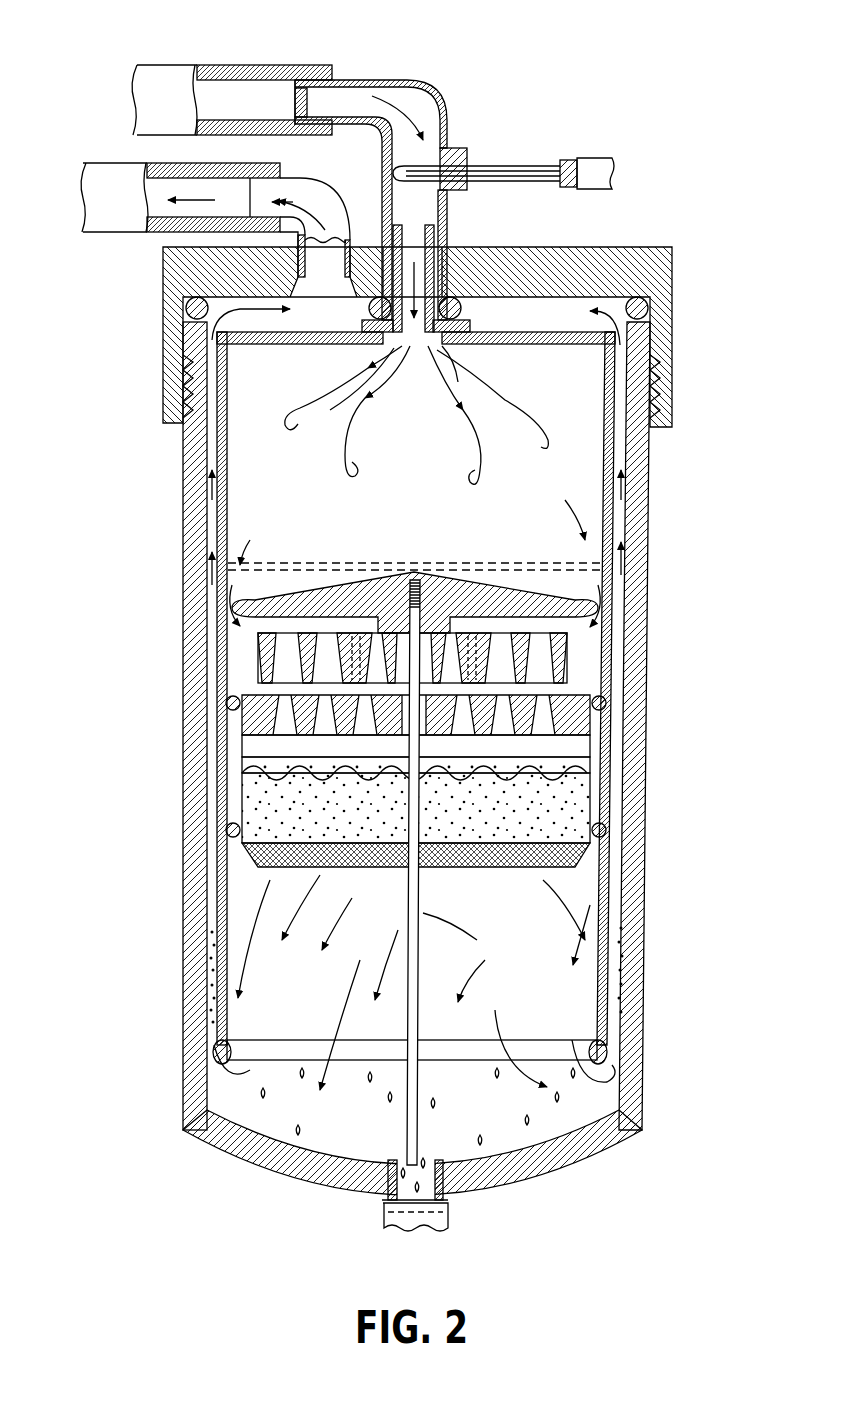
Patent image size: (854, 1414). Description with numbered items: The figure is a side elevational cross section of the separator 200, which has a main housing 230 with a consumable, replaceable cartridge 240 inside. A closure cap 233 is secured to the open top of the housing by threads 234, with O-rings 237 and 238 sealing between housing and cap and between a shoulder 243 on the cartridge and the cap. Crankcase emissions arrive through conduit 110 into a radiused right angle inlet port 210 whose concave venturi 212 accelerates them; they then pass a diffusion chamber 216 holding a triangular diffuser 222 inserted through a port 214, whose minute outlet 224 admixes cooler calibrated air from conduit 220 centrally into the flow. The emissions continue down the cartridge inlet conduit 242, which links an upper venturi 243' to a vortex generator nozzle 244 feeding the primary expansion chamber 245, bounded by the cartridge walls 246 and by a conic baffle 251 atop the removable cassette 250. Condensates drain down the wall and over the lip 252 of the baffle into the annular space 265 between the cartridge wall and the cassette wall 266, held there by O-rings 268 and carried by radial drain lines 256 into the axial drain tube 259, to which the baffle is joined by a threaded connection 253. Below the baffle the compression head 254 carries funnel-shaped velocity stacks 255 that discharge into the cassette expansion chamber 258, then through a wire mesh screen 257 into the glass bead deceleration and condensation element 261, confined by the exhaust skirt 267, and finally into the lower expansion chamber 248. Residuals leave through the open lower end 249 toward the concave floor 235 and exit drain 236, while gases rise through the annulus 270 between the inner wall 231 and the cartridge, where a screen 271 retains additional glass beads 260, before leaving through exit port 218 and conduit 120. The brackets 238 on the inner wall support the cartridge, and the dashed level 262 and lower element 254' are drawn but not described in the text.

The conduit 110 is at (172, 66).
The conduit 120 is at (100, 162).
The separator 200 is at (680, 127).
The inlet port 210 is at (380, 83).
The venturi 212 is at (275, 78).
The port 214 is at (453, 177).
The diffusion chamber 216 is at (430, 157).
The exit port 218 is at (330, 178).
The conduit 220 is at (610, 174).
The diffuser 222 is at (442, 181).
The outlet 224 is at (430, 175).
The main housing 230 is at (183, 603).
The inner wall 231 is at (210, 452).
The closure cap 233 is at (632, 289).
The threads 234 is at (188, 380).
The concave floor 235 is at (330, 1147).
The exit drain 236 is at (441, 1195).
The O-ring 237 is at (186, 308).
The O-ring / support bracket 238 is at (372, 314).
The cartridge 240 is at (212, 724).
The cartridge inlet conduit 242 is at (418, 247).
The shoulder 243 is at (482, 227).
The upper venturi 243' is at (495, 205).
The vortex generator nozzle 244 is at (436, 350).
The primary expansion chamber 245 is at (434, 452).
The cartridge wall 246 is at (228, 476).
The expansion chamber 248 is at (549, 991).
The open lower end 249 is at (435, 1062).
The cassette 250 is at (236, 763).
The baffle 251 is at (490, 587).
The lip 252 is at (590, 590).
The threaded connection / shoulder 253 is at (366, 657).
The compression head 254 is at (332, 598).
The lower filter element 254' is at (322, 683).
The velocity stacks 255 is at (258, 655).
The radial drain lines 256 is at (457, 690).
The wire mesh screen 257 is at (590, 766).
The expansion chamber 258 is at (590, 740).
The drain tube 259 is at (420, 920).
The glass beads 260 is at (210, 985).
The deceleration and condensation element 261 is at (262, 798).
The liquid level 262 is at (282, 565).
The annular space 265 is at (585, 665).
The cassette wall 266 is at (590, 650).
The exhaust skirt 267 is at (585, 853).
The O-rings 268 is at (226, 702).
The annulus 270 is at (213, 866).
The screen 271 is at (213, 1033).